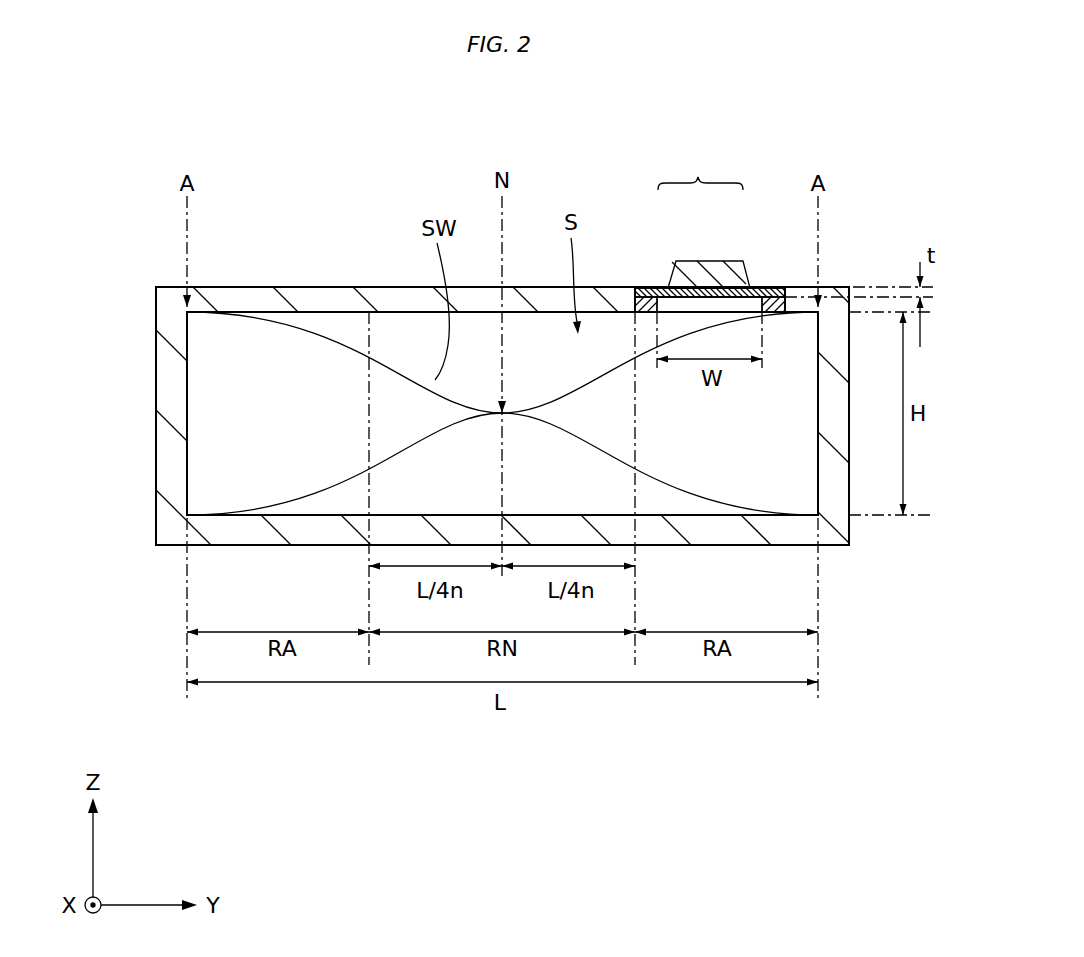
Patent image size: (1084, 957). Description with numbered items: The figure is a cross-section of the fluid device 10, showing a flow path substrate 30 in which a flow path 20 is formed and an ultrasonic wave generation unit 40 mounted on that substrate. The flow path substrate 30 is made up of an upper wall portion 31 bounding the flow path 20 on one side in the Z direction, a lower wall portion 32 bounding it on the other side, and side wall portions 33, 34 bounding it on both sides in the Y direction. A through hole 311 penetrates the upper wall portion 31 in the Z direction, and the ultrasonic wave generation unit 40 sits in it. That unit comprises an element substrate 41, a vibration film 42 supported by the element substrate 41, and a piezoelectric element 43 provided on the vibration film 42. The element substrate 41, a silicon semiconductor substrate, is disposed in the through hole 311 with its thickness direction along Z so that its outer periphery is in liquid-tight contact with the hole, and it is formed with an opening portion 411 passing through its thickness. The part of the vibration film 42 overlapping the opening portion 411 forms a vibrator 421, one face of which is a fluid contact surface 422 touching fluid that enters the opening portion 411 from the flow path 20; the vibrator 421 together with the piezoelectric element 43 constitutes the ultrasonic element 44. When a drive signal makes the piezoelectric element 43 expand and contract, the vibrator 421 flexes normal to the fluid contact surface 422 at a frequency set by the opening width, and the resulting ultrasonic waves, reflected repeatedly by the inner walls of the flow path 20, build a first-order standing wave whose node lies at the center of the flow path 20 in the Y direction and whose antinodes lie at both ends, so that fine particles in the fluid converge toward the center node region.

The fluid device 10 is at (175, 118).
The flow path 20 is at (556, 317).
The flow path substrate 30 is at (390, 287).
The upper wall portion 31 is at (341, 299).
The through hole 311 is at (637, 289).
The lower wall portion 32 is at (718, 538).
The side wall portion 33 is at (168, 464).
The side wall portion 34 is at (834, 412).
The ultrasonic wave generation unit 40 is at (649, 146).
The element substrate 41 is at (778, 305).
The opening portion 411 is at (753, 312).
The vibration film 42 is at (752, 289).
The vibrator 421 is at (661, 296).
The fluid contact surface 422 is at (647, 297).
The piezoelectric element 43 is at (712, 262).
The ultrasonic element 44 is at (700, 170).